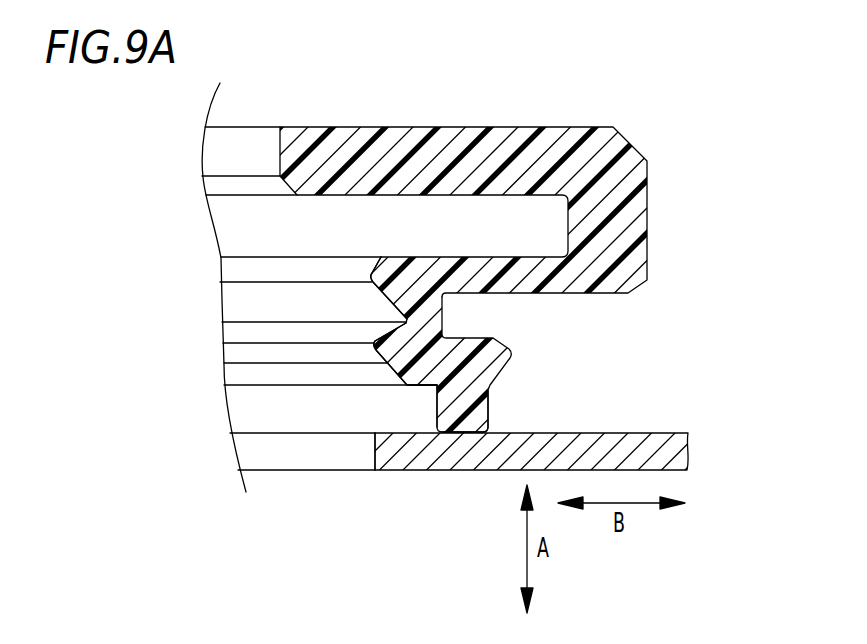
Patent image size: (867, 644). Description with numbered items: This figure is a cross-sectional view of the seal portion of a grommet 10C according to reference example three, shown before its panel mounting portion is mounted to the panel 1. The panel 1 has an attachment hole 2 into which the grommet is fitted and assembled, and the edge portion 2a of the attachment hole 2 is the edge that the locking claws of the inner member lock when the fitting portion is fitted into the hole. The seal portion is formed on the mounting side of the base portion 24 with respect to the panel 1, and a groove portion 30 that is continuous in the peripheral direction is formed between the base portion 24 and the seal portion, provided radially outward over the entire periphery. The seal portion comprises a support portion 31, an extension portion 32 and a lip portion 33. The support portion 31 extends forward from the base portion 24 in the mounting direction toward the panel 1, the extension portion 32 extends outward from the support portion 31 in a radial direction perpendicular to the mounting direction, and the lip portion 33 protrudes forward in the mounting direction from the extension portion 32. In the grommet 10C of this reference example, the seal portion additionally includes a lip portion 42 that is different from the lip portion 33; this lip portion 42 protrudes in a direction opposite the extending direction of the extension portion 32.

The grommet 10C is at (663, 121).
The base portion 24 is at (638, 284).
The groove portion 30 is at (466, 297).
The support portion 31 is at (400, 365).
The extension portion 32 is at (426, 386).
The lip portion 33 is at (477, 426).
The lip portion 42 is at (371, 350).
The panel 1 is at (653, 433).
The attachment hole 2 is at (246, 472).
The edge portion 2a is at (374, 452).